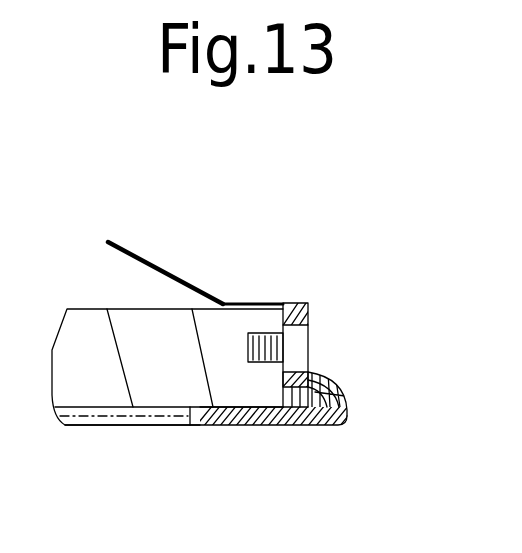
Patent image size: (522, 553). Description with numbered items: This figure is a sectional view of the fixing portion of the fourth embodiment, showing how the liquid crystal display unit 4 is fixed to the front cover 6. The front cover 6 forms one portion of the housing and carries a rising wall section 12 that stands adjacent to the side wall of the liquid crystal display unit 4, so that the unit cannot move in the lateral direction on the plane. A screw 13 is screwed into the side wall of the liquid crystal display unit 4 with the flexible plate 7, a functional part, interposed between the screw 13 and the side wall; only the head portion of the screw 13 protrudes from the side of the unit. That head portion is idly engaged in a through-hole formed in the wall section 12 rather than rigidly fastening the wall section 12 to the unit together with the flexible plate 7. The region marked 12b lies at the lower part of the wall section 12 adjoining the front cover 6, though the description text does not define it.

The liquid crystal display unit 4 is at (120, 332).
The flexible plate 7 is at (243, 303).
The wall section 12 is at (293, 303).
The screw 13 is at (305, 338).
The curled flange portion 12b is at (296, 370).
The front cover 6 is at (250, 426).